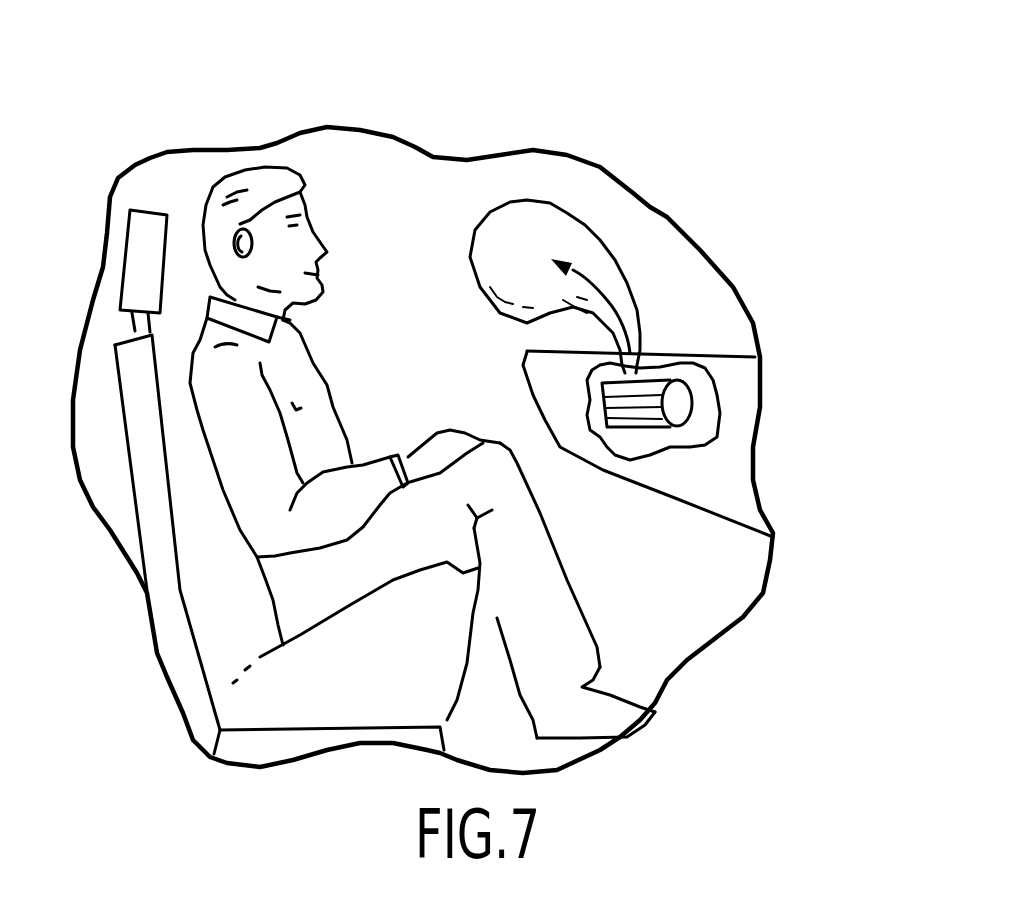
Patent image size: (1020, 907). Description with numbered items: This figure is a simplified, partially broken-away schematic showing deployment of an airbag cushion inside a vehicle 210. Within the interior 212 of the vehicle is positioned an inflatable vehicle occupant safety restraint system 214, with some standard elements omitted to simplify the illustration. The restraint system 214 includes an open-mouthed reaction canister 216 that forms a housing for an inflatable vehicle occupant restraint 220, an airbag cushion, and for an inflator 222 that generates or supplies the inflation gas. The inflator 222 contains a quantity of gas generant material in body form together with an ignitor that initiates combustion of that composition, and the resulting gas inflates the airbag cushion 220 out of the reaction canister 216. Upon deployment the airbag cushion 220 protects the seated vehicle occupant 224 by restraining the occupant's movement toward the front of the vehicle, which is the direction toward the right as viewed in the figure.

The vehicle 210 is at (546, 119).
The interior 212 is at (400, 202).
The inflatable vehicle occupant safety restraint system 214 is at (722, 410).
The reaction canister 216 is at (637, 425).
The inflatable vehicle occupant restraint 220 is at (590, 227).
The inflator 222 is at (683, 380).
The vehicle occupant 224 is at (242, 465).